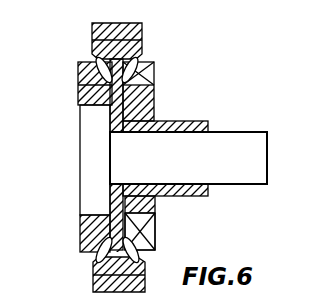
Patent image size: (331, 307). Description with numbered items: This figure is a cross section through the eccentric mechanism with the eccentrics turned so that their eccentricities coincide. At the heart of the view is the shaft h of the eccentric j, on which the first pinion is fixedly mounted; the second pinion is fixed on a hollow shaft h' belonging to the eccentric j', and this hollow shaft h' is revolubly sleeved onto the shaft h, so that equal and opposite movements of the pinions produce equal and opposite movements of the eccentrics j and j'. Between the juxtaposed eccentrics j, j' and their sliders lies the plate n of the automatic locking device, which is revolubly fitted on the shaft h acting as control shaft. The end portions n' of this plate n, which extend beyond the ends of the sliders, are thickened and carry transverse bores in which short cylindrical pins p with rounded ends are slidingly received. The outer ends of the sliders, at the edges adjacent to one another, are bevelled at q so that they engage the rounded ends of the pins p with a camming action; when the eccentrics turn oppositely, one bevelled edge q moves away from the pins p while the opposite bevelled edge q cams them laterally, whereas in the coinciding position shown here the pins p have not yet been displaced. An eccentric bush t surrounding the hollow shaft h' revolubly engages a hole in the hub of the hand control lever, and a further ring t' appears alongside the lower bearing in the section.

The shaft h is at (203, 146).
The hollow shaft h' is at (165, 153).
The eccentric j is at (70, 160).
The eccentric j' is at (165, 153).
The bevelled edge q is at (82, 90).
The eccentric bush t is at (165, 153).
The lower bearing ring t' is at (165, 153).
The cylindrical pin p is at (142, 58).
The plate n is at (165, 153).
The end portion n' is at (165, 153).